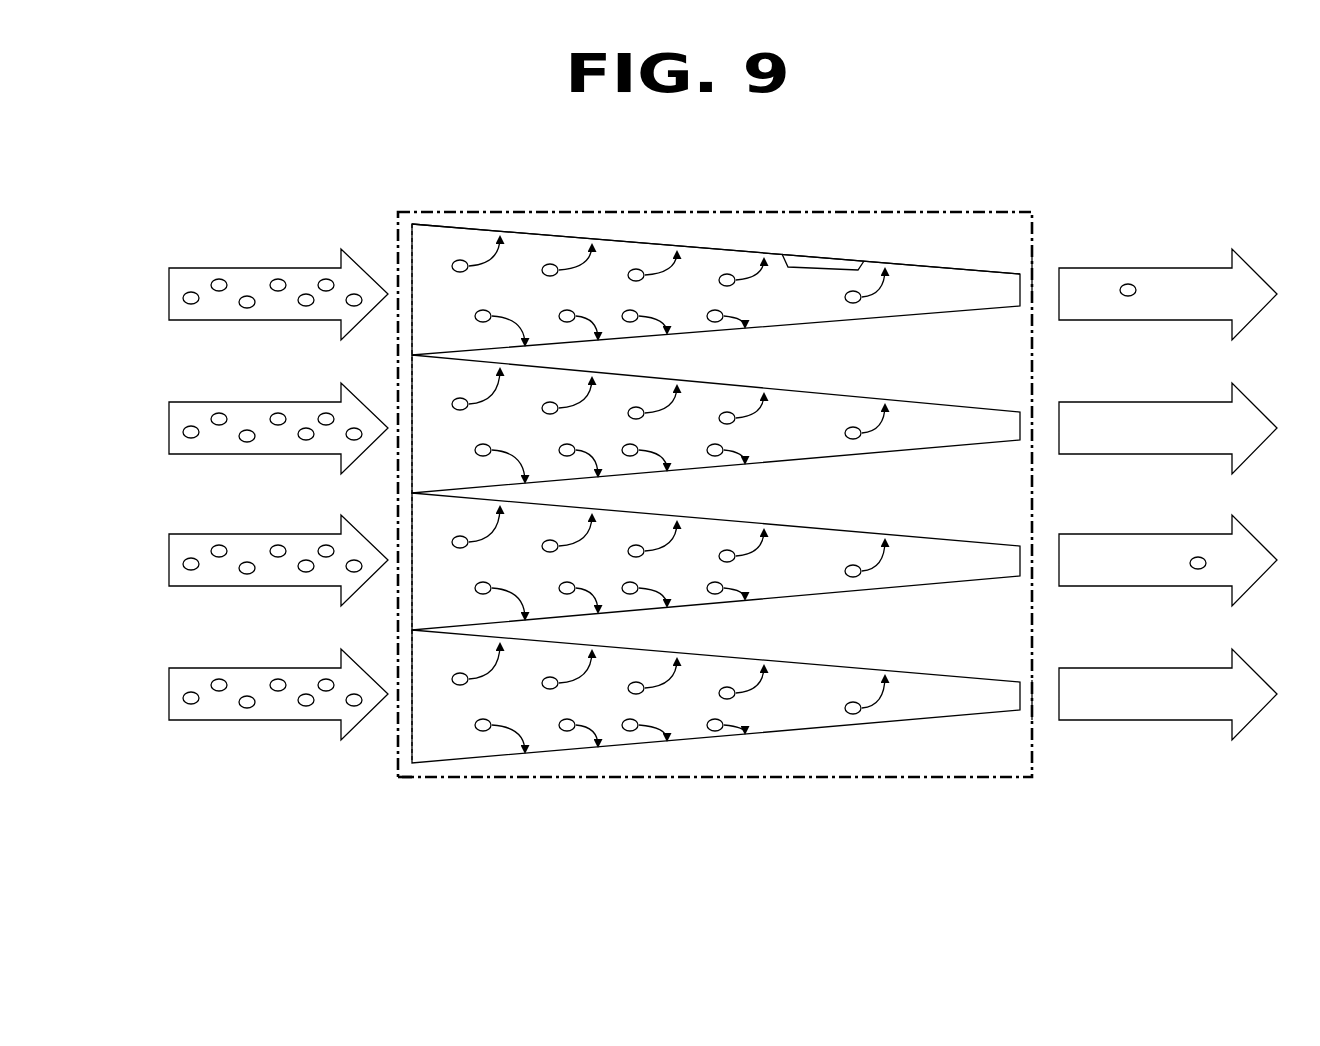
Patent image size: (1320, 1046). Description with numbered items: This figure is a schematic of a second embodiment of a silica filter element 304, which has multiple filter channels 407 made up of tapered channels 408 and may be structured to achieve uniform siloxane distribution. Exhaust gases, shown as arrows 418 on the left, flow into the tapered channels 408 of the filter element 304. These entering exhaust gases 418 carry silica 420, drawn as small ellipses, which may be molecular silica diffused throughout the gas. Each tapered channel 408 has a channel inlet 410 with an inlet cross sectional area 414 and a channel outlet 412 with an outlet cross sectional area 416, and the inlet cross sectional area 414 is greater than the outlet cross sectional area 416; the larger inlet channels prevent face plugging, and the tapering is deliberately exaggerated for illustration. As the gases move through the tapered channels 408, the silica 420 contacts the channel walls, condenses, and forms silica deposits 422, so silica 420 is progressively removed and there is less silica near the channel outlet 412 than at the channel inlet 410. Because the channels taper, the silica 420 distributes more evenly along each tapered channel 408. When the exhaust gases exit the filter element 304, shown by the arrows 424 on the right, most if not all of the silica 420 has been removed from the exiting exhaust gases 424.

The silica filter element 304 is at (957, 208).
The filter channels 407 is at (703, 247).
The tapered channels 408 is at (620, 240).
The channel inlet 410 is at (410, 248).
The channel outlet 412 is at (1036, 272).
The inlet cross sectional area 414 is at (397, 740).
The outlet cross sectional area 416 is at (1024, 703).
The exhaust gases 418 is at (245, 268).
The silica 420 is at (247, 306).
The silica deposits 422 is at (818, 262).
The exiting exhaust gases 424 is at (1190, 268).